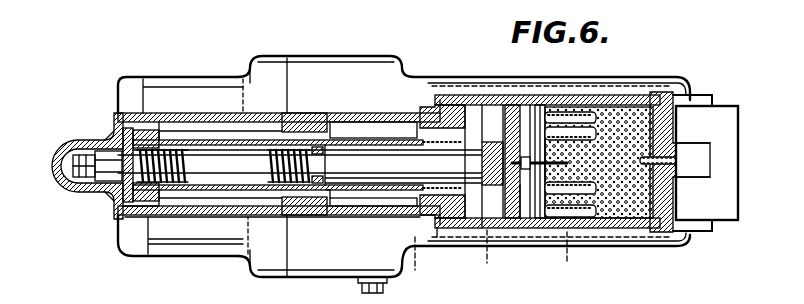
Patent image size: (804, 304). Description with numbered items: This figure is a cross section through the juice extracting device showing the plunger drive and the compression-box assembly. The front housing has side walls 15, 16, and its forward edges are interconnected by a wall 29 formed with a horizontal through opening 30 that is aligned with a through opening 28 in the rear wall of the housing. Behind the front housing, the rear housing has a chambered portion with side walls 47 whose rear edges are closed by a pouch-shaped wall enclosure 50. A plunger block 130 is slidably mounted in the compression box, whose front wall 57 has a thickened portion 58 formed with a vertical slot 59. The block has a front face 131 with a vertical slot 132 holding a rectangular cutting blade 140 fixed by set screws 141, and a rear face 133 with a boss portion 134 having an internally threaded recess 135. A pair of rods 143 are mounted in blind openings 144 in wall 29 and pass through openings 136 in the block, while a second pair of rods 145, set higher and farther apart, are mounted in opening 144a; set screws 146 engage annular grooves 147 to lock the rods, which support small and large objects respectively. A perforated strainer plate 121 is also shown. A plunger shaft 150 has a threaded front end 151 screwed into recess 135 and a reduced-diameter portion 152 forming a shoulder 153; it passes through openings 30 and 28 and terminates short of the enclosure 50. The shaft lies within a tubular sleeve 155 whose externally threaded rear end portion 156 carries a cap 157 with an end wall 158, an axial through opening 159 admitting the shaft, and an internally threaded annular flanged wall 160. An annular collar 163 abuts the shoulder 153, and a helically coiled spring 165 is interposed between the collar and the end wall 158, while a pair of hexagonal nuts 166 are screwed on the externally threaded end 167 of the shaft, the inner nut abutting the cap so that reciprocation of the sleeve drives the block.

The side wall 15 is at (323, 56).
The side wall 16 is at (302, 268).
The through opening 28 is at (308, 114).
The wall 29 is at (452, 95).
The through opening 30 is at (430, 196).
The side walls 47 is at (170, 113).
The pouch-shaped wall enclosure 50 is at (66, 150).
The front wall 57 is at (683, 110).
The thickened portion 58 is at (702, 146).
The vertical slot 59 is at (688, 182).
The perforated strainer plate 121 is at (640, 100).
The plunger block 130 is at (567, 230).
The front face 131 is at (537, 104).
The vertical slot 132 is at (522, 110).
The rear face 133 is at (492, 226).
The boss portion 134 is at (470, 108).
The internally threaded recess 135 is at (500, 230).
The through openings 136 is at (548, 210).
The cutting blade 140 is at (567, 118).
The set screws 141 is at (565, 206).
The rods 143 is at (583, 118).
The blind openings 144 is at (417, 146).
The opening 144a is at (412, 240).
The rods 145 is at (574, 118).
The set screws 146 is at (437, 243).
The annular grooves 147 is at (495, 253).
The plunger shaft 150 is at (336, 160).
The threaded front end 151 is at (474, 164).
The shaft portion of reduced diameter 152 is at (228, 156).
The shoulder 153 is at (352, 178).
The tubular sleeve 155 is at (350, 206).
The externally threaded rear end portion 156 is at (135, 115).
The cap 157 is at (147, 215).
The end wall 158 is at (123, 145).
The axial through opening 159 is at (122, 185).
The annular flanged wall 160 is at (128, 132).
The annular collar 163 is at (305, 215).
The helically coiled spring 165 is at (172, 192).
The hexagonal nuts 166 is at (84, 140).
The externally threaded end 167 is at (84, 178).